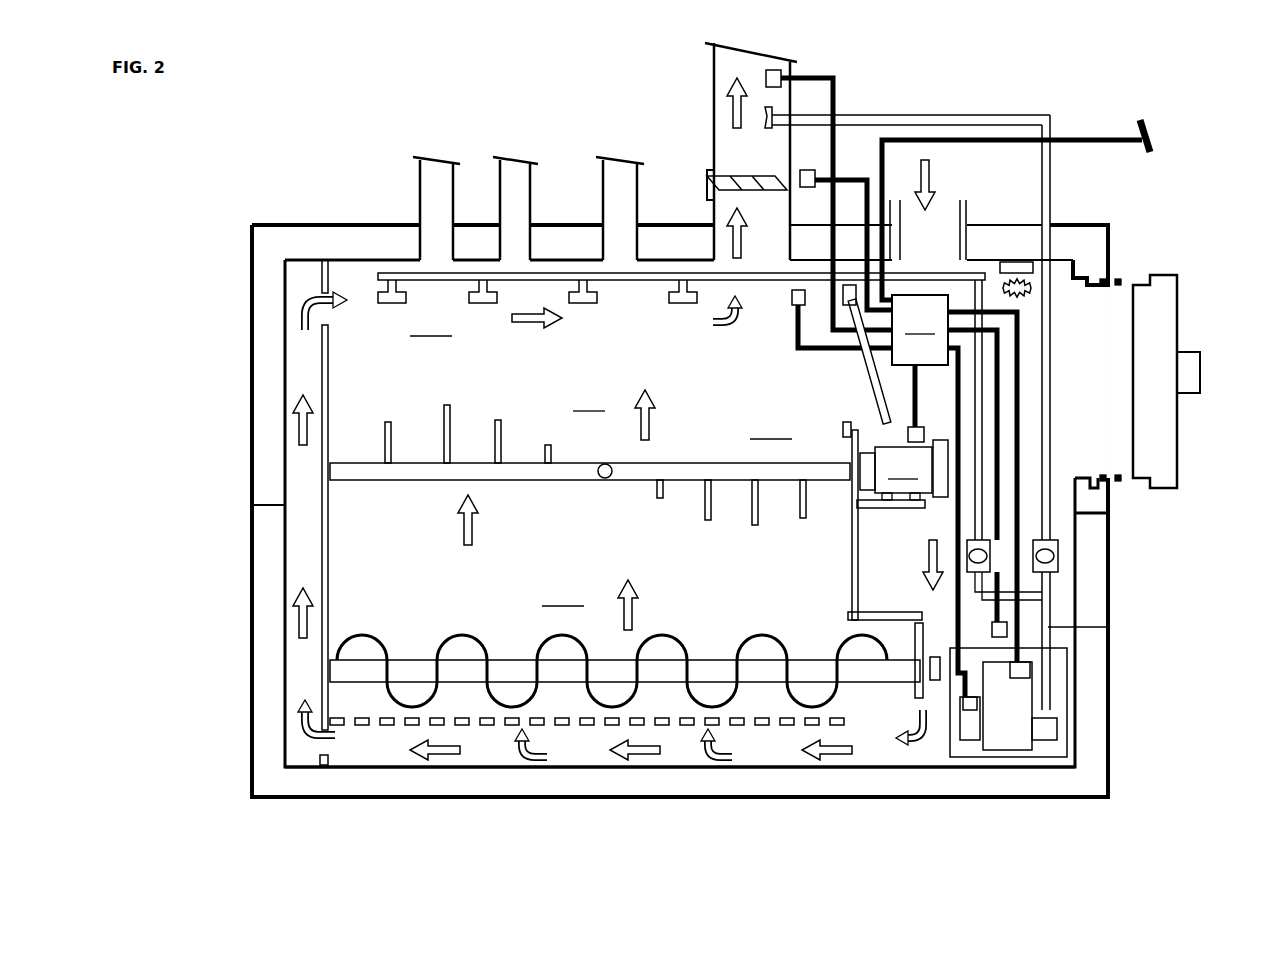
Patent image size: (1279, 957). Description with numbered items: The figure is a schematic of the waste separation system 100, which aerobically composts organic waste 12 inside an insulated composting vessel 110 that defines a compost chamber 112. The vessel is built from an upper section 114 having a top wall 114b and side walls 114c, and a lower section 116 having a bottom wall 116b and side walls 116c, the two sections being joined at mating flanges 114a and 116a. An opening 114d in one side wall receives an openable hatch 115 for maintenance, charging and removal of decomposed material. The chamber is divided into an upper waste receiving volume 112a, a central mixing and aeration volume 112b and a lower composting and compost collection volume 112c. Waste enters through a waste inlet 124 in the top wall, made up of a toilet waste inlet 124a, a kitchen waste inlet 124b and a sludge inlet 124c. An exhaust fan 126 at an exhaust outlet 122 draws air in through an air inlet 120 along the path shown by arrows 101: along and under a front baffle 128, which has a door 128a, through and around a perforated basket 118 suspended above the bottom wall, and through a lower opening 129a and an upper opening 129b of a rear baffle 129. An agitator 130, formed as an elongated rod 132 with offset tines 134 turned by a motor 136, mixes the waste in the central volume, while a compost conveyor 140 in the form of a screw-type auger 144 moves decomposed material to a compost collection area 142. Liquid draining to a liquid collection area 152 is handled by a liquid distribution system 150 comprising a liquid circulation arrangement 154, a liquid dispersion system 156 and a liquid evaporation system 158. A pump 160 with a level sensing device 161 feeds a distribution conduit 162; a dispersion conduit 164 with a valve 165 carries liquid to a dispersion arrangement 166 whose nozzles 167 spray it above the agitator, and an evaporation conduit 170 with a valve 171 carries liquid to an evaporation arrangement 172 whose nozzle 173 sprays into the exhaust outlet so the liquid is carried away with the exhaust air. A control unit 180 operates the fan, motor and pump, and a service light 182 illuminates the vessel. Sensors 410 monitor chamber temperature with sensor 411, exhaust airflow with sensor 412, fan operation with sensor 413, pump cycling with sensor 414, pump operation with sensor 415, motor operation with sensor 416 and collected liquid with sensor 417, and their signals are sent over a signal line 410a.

The organic waste 12 is at (405, 553).
The waste separation system 100 is at (1162, 88).
The arrows 101 is at (298, 425).
The composting vessel 110 is at (250, 290).
The compost chamber 112 is at (589, 401).
The upper waste receiving volume 112a is at (432, 326).
The central mixing and aeration volume 112b is at (773, 429).
The lower composting and compost collection volume 112c is at (564, 596).
The upper section 114 is at (270, 367).
The mating flange 114a is at (268, 508).
The top wall 114b is at (412, 237).
The side walls 114c is at (268, 345).
The opening 114d is at (1105, 380).
The hatch 115 is at (1170, 325).
The lower section 116 is at (270, 637).
The mating flange 116a is at (280, 515).
The bottom wall 116b is at (665, 775).
The side walls 116c is at (270, 688).
The perforated basket 118 is at (385, 726).
The air inlet 120 is at (930, 222).
The exhaust outlet 122 is at (722, 50).
The waste inlet 124 is at (514, 133).
The toilet waste inlet 124a is at (437, 173).
The kitchen waste inlet 124b is at (625, 173).
The sludge inlet 124c is at (523, 173).
The exhaust fan 126 is at (715, 182).
The front baffle 128 is at (858, 552).
The door 128a is at (862, 375).
The rear baffle 129 is at (320, 548).
The lower opening 129a is at (320, 737).
The upper opening 129b is at (320, 298).
The organic waste agitator 130 is at (510, 405).
The elongated rod 132 is at (510, 466).
The tines 134 is at (390, 422).
The motor 136 is at (902, 474).
The compost conveyor 140 is at (665, 690).
The compost collection area 142 is at (855, 745).
The screw-type auger 144 is at (505, 700).
The liquid distribution system 150 is at (1060, 616).
The liquid collection area 152 is at (937, 757).
The liquid circulation arrangement 154 is at (1052, 593).
The liquid dispersion system 156 is at (383, 272).
The liquid evaporation system 158 is at (860, 115).
The pump 160 is at (1015, 730).
The sensing device 161 is at (967, 730).
The distribution conduit 162 is at (1108, 627).
The dispersion conduit 164 is at (975, 365).
The valve 165 is at (1018, 512).
The dispersion arrangement 166 is at (635, 300).
The nozzle 167 is at (677, 300).
The evaporation conduit 170 is at (1045, 195).
The valve 171 is at (1060, 553).
The evaporation arrangement 172 is at (810, 95).
The aperture or nozzle 173 is at (762, 125).
The control unit 180 is at (920, 330).
The service light 182 is at (1010, 265).
The sensors 410 is at (950, 103).
The signal line 410a is at (1075, 135).
The sensor 411 is at (795, 305).
The sensor 412 is at (775, 72).
The sensor 413 is at (812, 170).
The sensor 414 is at (983, 700).
The sensor 415 is at (1030, 670).
The sensor 416 is at (925, 435).
The sensor 417 is at (990, 625).